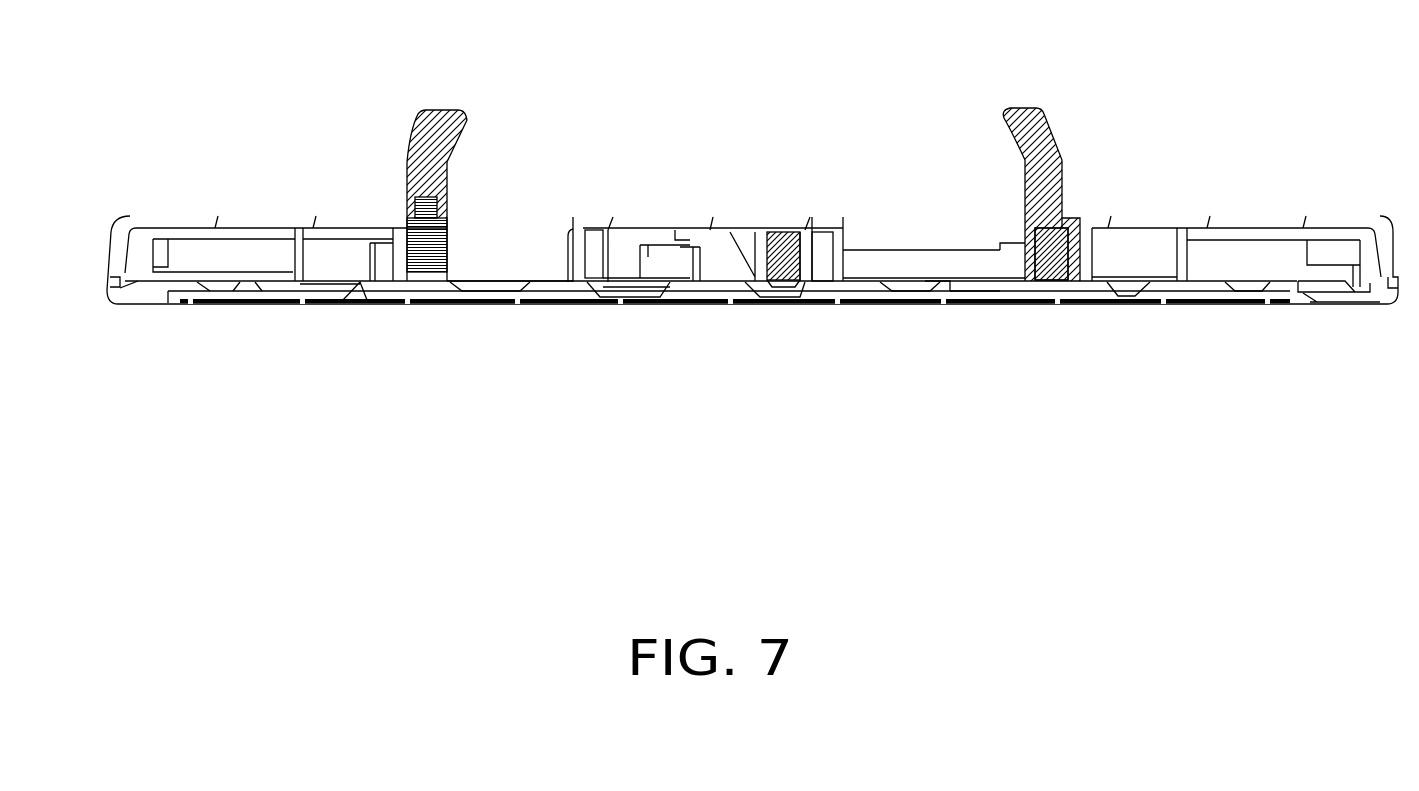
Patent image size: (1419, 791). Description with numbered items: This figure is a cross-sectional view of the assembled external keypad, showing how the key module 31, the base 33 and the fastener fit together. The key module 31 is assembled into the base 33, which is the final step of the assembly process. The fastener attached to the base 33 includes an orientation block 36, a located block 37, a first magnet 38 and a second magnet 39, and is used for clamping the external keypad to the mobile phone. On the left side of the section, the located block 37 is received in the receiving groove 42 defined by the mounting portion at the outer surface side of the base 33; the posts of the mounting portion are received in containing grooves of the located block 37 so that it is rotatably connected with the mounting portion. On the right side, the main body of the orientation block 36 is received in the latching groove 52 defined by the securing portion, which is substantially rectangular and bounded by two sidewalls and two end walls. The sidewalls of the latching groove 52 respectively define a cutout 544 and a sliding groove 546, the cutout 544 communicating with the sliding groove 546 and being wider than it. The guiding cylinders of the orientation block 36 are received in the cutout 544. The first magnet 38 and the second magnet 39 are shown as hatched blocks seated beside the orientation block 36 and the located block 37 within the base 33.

The key module 31 is at (112, 292).
The base 33 is at (135, 237).
The orientation block 36 is at (1040, 128).
The located block 37 is at (443, 123).
The first magnet 38 is at (1070, 236).
The second magnet 39 is at (781, 232).
The receiving groove 42 is at (502, 243).
The latching groove 52 is at (905, 235).
The cutout 544 is at (1013, 247).
The sliding groove 546 is at (937, 263).